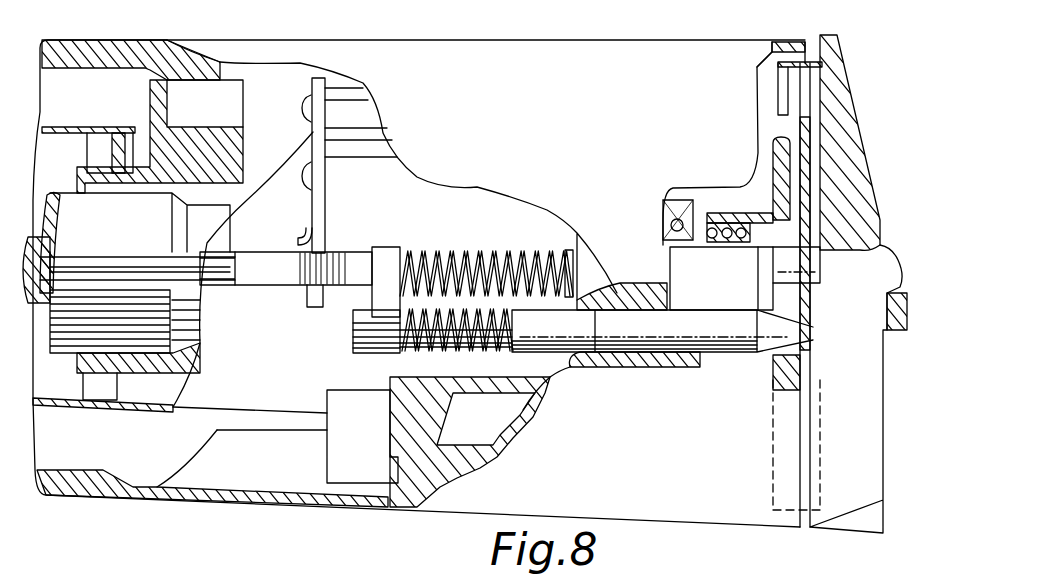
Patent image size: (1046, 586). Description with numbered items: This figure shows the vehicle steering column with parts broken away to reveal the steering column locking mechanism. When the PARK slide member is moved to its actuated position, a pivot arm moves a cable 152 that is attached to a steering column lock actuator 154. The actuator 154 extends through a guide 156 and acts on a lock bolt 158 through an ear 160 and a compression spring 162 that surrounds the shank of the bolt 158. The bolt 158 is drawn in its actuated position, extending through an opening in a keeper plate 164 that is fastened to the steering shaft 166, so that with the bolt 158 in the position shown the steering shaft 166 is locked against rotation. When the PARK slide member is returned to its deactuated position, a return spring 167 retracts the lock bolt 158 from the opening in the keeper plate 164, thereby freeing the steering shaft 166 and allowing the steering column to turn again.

The cable 152 is at (95, 265).
The steering column lock actuator 154 is at (345, 250).
The guide 156 is at (312, 132).
The lock bolt 158 is at (612, 330).
The ear 160 is at (382, 335).
The compression spring 162 is at (473, 345).
The keeper plate 164 is at (770, 375).
The steering shaft 166 is at (58, 289).
The return spring 167 is at (533, 250).